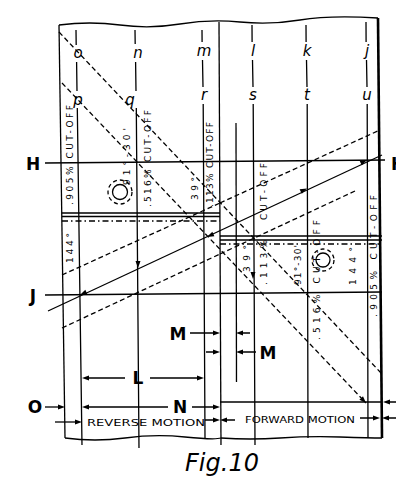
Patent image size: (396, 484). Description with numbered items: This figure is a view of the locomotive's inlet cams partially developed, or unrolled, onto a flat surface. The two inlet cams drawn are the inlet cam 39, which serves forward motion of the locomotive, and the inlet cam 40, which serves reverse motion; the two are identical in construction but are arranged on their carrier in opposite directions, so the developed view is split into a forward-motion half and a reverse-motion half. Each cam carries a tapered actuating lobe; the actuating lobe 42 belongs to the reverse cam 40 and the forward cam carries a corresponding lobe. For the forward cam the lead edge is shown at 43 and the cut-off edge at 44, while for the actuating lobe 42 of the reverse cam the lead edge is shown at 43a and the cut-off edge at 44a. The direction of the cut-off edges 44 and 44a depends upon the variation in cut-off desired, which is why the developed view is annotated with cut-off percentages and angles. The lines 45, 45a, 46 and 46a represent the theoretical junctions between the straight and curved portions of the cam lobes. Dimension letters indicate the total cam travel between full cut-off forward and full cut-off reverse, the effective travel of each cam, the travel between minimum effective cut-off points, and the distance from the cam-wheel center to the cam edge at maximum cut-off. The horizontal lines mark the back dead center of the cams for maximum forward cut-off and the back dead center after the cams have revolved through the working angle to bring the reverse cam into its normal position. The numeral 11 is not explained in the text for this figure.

The lap and lead line (valve travel band) 11 is at (40, 198).
The inlet cam 39 is at (320, 440).
The inlet cam 40 is at (123, 440).
The actuating lobe 42 is at (62, 254).
The lead edge 43 is at (327, 152).
The lead edge 43a is at (120, 301).
The cut-off edge 44 is at (304, 344).
The cut-off edge 44a is at (135, 97).
The junction line 45 is at (353, 196).
The junction line 45a is at (146, 236).
The junction line 46 is at (324, 294).
The junction line 46a is at (60, 105).